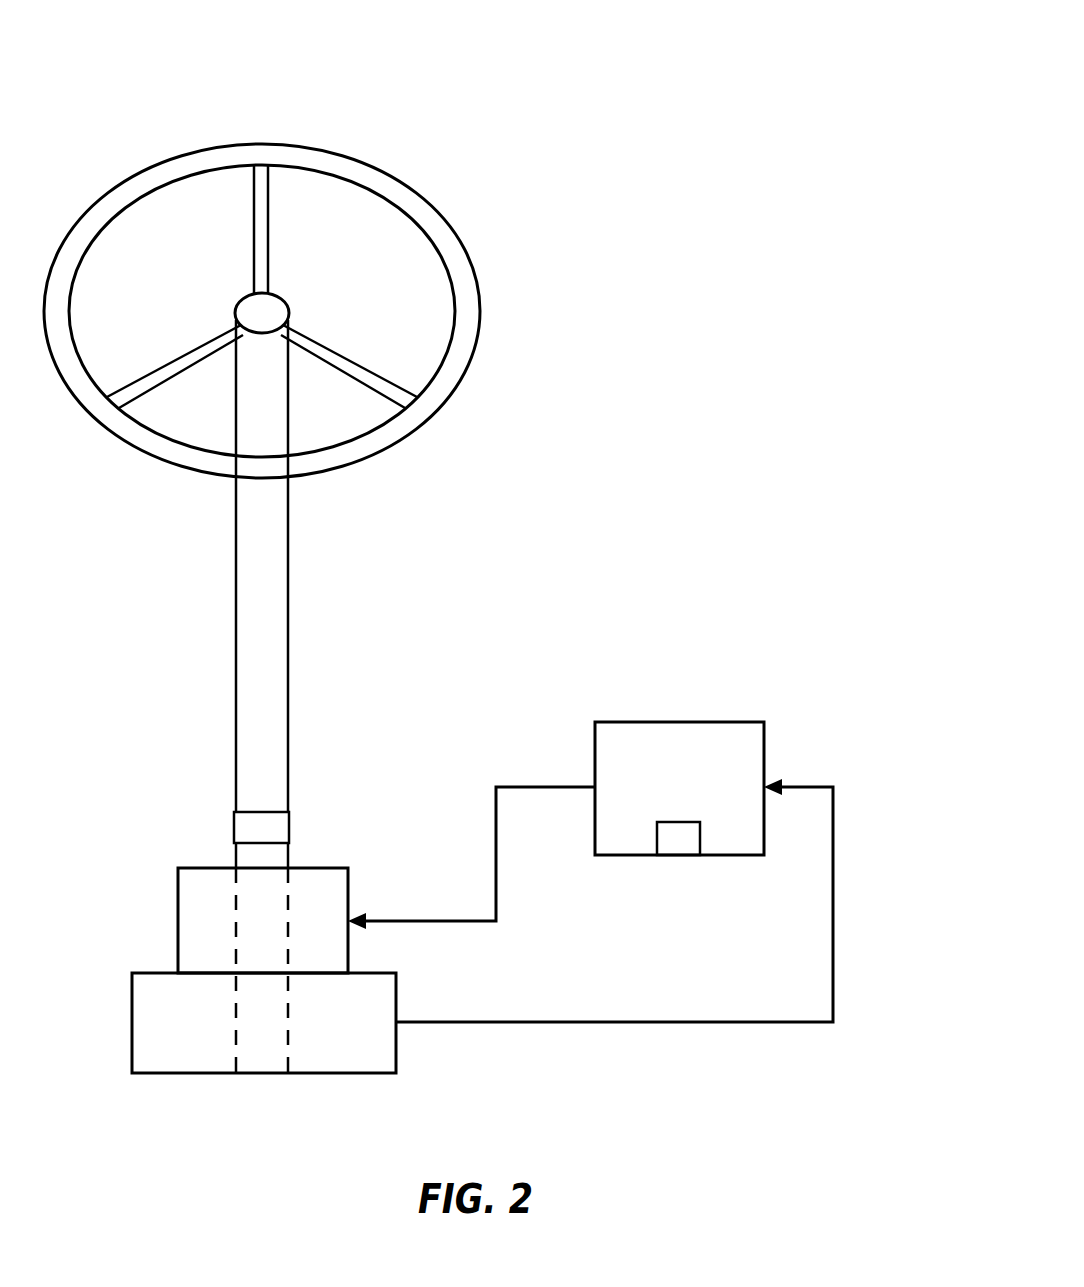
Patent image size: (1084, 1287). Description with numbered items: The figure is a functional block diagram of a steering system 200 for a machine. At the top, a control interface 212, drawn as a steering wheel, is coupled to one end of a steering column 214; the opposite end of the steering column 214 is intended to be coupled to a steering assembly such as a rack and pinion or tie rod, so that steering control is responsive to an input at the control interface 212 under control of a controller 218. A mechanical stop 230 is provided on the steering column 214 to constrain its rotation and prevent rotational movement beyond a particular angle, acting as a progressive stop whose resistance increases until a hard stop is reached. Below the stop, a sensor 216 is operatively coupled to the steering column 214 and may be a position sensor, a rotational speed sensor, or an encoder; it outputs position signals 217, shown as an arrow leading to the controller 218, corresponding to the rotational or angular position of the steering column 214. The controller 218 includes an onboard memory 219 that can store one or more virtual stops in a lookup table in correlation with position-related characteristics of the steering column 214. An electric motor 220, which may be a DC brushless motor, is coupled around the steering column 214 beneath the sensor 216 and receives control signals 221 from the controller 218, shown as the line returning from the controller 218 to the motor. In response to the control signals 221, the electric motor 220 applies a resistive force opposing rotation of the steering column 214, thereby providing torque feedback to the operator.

The steering system 200 is at (679, 123).
The control interface 212 is at (417, 192).
The steering column 214 is at (235, 710).
The mechanical stop 230 is at (262, 828).
The sensor 216 is at (177, 935).
The position signals 217 is at (393, 920).
The controller 218 is at (683, 721).
The memory 219 is at (678, 837).
The electric motor 220 is at (330, 1073).
The control signals 221 is at (500, 1022).